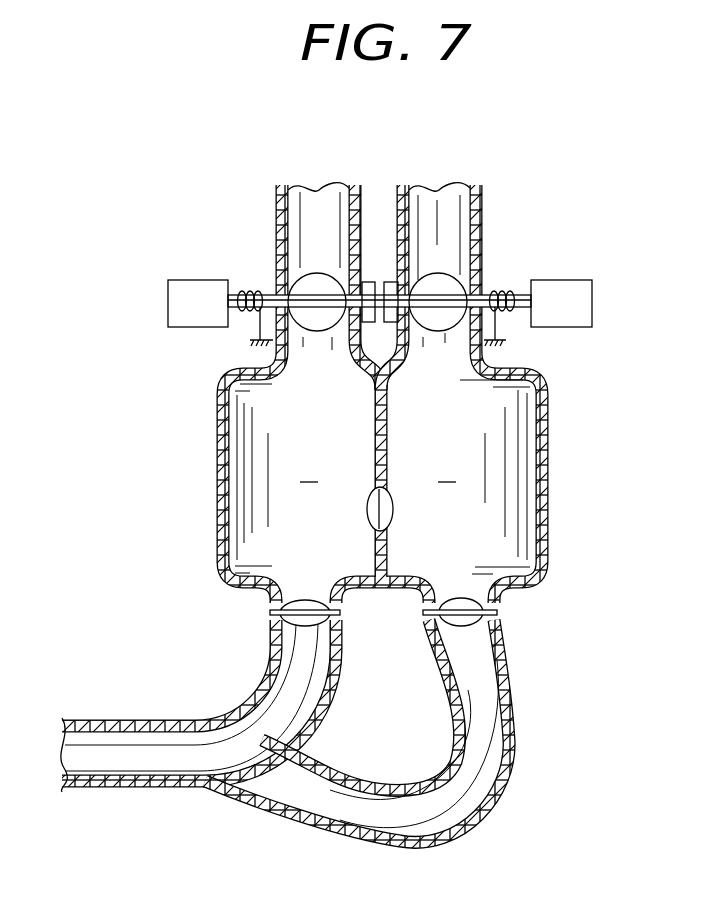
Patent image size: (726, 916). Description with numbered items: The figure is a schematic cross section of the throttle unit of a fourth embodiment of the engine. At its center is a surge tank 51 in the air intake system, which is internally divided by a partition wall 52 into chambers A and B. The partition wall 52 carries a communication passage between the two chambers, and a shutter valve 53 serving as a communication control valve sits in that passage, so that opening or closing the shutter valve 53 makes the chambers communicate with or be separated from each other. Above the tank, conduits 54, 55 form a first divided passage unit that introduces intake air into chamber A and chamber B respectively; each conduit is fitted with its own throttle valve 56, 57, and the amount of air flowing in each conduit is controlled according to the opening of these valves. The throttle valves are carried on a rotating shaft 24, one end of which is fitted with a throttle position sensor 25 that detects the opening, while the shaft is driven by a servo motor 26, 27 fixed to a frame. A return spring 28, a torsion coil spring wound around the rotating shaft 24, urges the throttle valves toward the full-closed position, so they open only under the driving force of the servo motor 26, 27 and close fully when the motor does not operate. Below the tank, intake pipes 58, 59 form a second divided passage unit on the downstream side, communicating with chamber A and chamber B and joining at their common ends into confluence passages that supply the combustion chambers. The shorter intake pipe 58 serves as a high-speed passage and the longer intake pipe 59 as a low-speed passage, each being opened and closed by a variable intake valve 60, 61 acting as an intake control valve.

The rotating shaft 24 is at (276, 293).
The throttle position sensor 25 is at (371, 282).
The servo motor 26 is at (173, 321).
The servo motor 27 is at (592, 302).
The return spring 28 is at (249, 312).
The surge tank 51 is at (549, 449).
The partition wall 52 is at (388, 425).
The shutter valve 53 is at (393, 518).
The conduit 54 is at (277, 231).
The conduit 55 is at (483, 222).
The throttle valve 56 is at (325, 324).
The throttle valve 57 is at (430, 284).
The intake pipe 58 is at (330, 700).
The intake pipe 59 is at (519, 705).
The variable intake valve 60 is at (309, 601).
The variable intake valve 61 is at (478, 626).